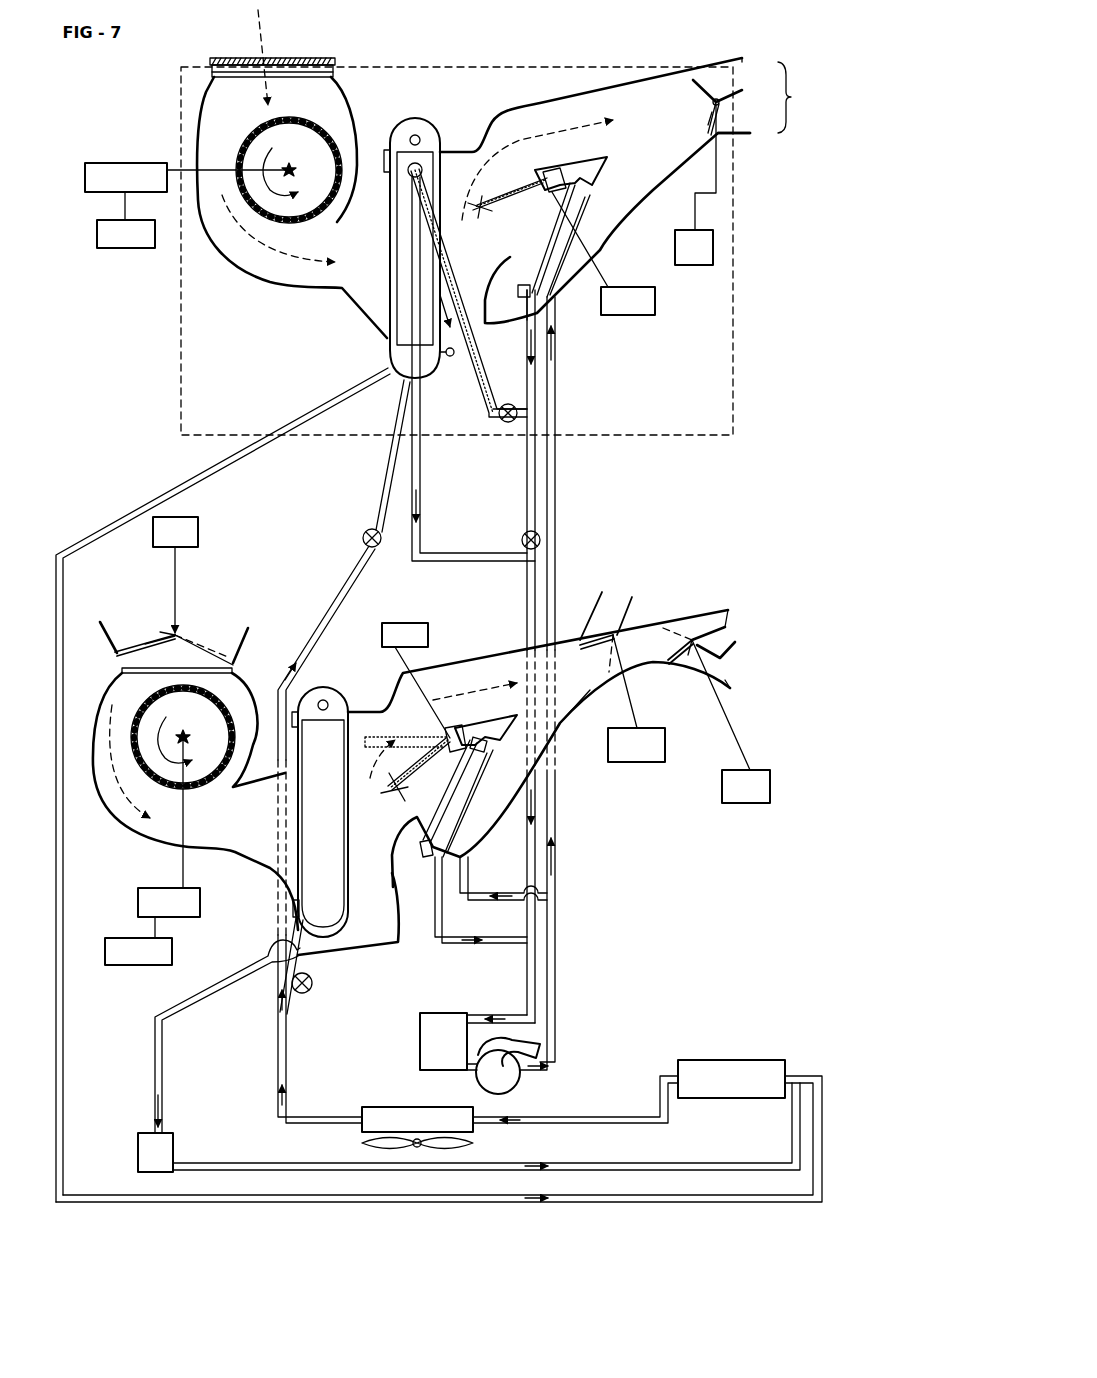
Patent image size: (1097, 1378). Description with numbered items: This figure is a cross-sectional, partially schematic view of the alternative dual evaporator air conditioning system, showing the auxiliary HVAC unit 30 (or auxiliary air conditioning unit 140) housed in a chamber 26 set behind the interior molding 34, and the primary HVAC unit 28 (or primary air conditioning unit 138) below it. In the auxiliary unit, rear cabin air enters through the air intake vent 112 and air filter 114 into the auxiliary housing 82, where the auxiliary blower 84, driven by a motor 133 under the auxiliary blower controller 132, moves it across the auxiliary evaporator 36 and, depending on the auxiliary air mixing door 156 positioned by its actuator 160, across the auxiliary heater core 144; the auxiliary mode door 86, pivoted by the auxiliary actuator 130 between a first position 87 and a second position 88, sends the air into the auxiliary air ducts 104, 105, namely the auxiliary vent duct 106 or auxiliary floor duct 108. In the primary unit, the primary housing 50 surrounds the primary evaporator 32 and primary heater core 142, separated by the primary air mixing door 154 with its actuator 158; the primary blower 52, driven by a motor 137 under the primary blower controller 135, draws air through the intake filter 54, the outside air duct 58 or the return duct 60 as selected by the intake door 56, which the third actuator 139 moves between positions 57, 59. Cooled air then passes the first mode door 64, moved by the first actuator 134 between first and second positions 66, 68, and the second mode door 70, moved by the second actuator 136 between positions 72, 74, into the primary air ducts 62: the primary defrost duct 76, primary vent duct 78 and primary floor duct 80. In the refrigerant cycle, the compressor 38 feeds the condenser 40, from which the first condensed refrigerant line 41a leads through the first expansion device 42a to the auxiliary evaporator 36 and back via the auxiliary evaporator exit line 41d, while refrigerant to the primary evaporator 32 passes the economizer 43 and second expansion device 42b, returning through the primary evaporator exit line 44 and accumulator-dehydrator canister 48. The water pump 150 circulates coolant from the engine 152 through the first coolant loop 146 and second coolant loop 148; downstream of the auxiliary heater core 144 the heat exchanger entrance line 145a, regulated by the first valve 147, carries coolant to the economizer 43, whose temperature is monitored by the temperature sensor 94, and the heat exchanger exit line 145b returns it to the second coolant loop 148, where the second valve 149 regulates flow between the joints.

The chamber 26 is at (712, 357).
The primary HVAC unit 28 is at (125, 990).
The auxiliary HVAC unit 30 is at (688, 46).
The primary evaporator 32 is at (320, 812).
The interior molding 34 is at (463, 66).
The auxiliary evaporator 36 is at (466, 152).
The compressor 38 is at (486, 1115).
The condenser 40 is at (520, 1112).
The first condensed refrigerant line 41a is at (320, 626).
The auxiliary evaporator exit line 41d is at (55, 600).
The first expansion device 42a is at (363, 540).
The second expansion device 42b is at (312, 986).
The economizer 43 is at (412, 248).
The primary evaporator exit line 44 is at (200, 998).
The accumulator-dehydrator canister 48 is at (155, 1152).
The primary housing 50 is at (112, 810).
The primary blower 52 is at (132, 737).
The intake filter 54 is at (122, 670).
The intake door 56 is at (113, 650).
The first intake door position 57 is at (165, 630).
The outside air duct 58 is at (185, 640).
The second intake door position 59 is at (215, 650).
The return duct 60 is at (145, 637).
The primary air ducts 62 is at (780, 607).
The first mode door 64 is at (598, 693).
The first position of first mode door 66 is at (592, 640).
The second position of first mode door 68 is at (607, 678).
The second mode door 70 is at (680, 668).
The first position of second mode door 72 is at (688, 656).
The second position of second mode door 74 is at (680, 635).
The primary defrost duct 76 is at (610, 620).
The primary vent duct 78 is at (728, 622).
The primary floor duct 80 is at (732, 668).
The auxiliary housing 82 is at (357, 128).
The auxiliary blower 84 is at (323, 133).
The auxiliary mode door 86 is at (682, 100).
The first position of auxiliary mode door 87 is at (698, 106).
The second position of auxiliary mode door 88 is at (708, 120).
The temperature sensor 94 is at (450, 357).
The auxiliary air ducts 104 is at (767, 169).
The front outlet 105 is at (768, 205).
The auxiliary vent duct 106 is at (700, 90).
The auxiliary floor duct 108 is at (717, 108).
The air intake vent 112 is at (283, 57).
The air filter 114 is at (303, 78).
The auxiliary actuator 130 is at (695, 185).
The auxiliary blower controller 132 is at (126, 220).
The motor 133 is at (187, 177).
The first actuator 134 is at (636, 698).
The primary blower controller 135 is at (138, 941).
The second actuator 136 is at (731, 721).
The motor 137 is at (169, 902).
The primary air conditioning unit 138 is at (239, 980).
The third actuator 139 is at (175, 575).
The auxiliary air conditioning unit / third coolant loop 140 is at (480, 405).
The primary heater core 142 is at (470, 835).
The auxiliary heater core 144 is at (530, 305).
The heat exchanger entrance line 145a is at (457, 292).
The heat exchanger exit line 145b is at (488, 560).
The first coolant loop 146 is at (470, 943).
The first valve 147 is at (507, 404).
The second coolant loop 148 is at (527, 613).
The second valve 149 is at (540, 545).
The water pump 150 is at (508, 1066).
The engine 152 is at (448, 1041).
The primary air mixing door 154 is at (390, 795).
The auxiliary air mixing door 156 is at (522, 196).
The actuator 158 is at (449, 740).
The actuator 160 is at (586, 236).